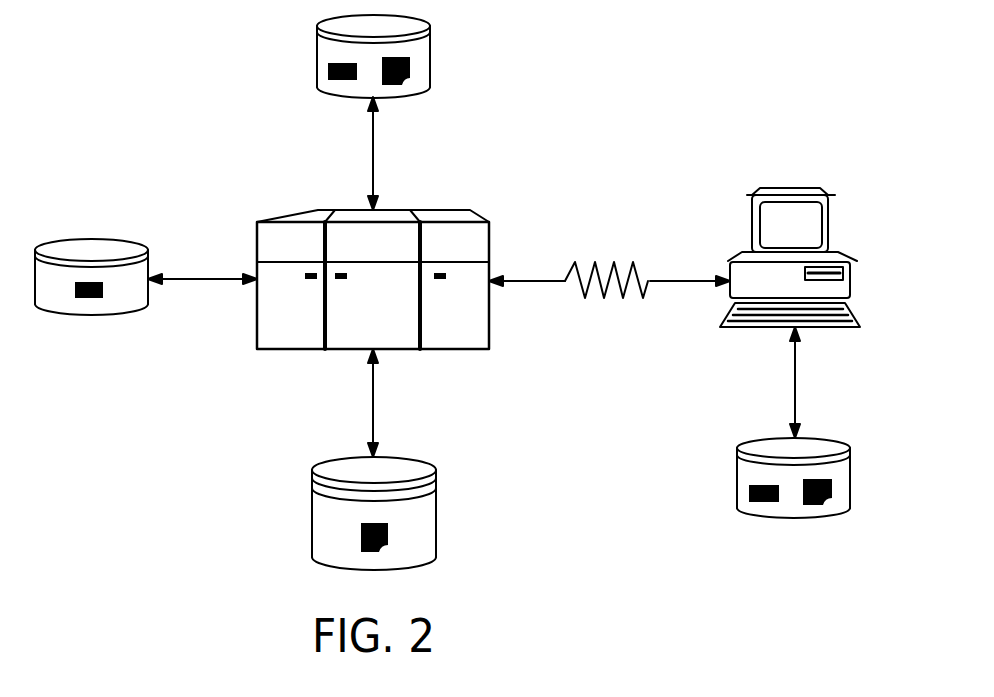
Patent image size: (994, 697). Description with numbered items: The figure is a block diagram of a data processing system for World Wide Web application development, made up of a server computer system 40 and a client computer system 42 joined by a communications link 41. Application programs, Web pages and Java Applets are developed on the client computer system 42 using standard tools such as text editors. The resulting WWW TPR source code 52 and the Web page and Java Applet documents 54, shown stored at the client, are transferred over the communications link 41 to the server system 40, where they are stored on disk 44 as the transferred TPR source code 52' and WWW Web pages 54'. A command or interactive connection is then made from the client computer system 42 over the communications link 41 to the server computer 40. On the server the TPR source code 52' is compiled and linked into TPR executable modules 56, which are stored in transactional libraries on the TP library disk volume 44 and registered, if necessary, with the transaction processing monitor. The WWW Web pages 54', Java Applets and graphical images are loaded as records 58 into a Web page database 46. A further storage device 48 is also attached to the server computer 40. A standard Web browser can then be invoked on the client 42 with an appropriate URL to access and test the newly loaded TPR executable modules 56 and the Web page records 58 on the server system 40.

The server computer system 40 is at (437, 209).
The communications link 41 is at (553, 282).
The client computer system 42 is at (752, 333).
The disk 44 is at (402, 97).
The Web page database 46 is at (120, 240).
The database storage 48 is at (425, 464).
The WWW TPR source code 52 is at (737, 508).
The Web page and Java Applet documents 54 is at (850, 500).
The TPR source code 52' is at (313, 86).
The WWW Web pages 54' is at (433, 78).
The TPR executable modules 56 is at (103, 290).
The records 58 is at (360, 535).